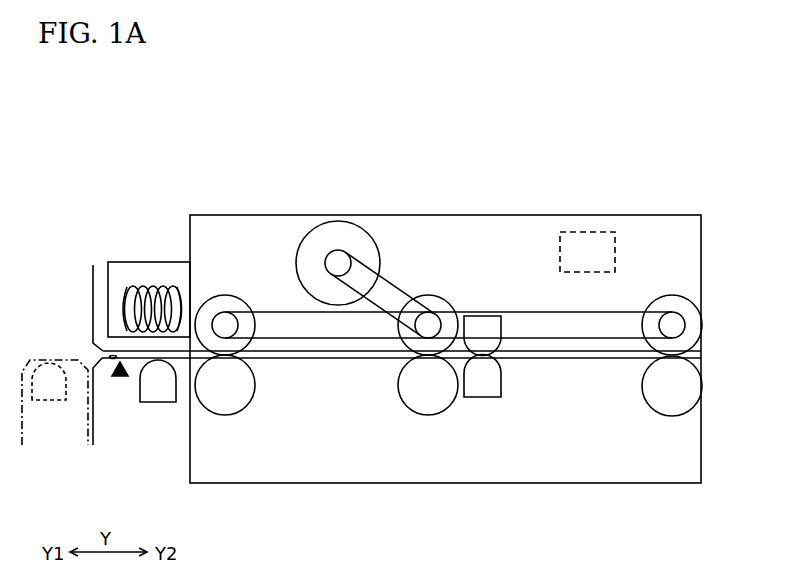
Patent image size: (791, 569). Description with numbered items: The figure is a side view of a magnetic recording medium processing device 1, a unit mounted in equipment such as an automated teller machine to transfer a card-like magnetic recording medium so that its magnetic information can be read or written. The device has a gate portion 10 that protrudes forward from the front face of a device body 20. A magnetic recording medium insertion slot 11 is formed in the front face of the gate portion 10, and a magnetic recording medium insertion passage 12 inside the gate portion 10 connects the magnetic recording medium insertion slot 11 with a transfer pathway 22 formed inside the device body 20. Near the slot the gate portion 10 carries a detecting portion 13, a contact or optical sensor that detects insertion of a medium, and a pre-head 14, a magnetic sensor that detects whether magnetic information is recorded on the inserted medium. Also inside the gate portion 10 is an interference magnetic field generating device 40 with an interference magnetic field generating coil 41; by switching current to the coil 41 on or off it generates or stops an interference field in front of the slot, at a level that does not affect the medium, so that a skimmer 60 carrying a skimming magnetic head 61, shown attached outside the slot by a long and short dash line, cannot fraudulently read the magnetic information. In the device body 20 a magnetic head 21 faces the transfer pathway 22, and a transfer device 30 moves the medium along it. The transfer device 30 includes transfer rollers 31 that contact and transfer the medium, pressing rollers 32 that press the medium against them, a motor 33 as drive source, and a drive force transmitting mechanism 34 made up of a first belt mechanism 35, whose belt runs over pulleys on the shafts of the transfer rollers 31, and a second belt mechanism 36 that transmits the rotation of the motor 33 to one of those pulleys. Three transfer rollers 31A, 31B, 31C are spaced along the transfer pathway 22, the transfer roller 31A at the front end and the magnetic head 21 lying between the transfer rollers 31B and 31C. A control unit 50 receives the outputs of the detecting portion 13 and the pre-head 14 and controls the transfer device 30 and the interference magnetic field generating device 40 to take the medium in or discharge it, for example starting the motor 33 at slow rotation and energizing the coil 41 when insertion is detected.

The magnetic recording medium processing device 1 is at (700, 146).
The gate portion 10 is at (170, 240).
The magnetic recording medium insertion slot 11 is at (91, 344).
The magnetic recording medium insertion passage 12 is at (106, 372).
The detecting portion 13 is at (119, 378).
The pre-head 14 is at (153, 404).
The device body 20 is at (237, 203).
The magnetic head 21 is at (481, 399).
The transfer pathway 22 is at (583, 359).
The transfer device 30 is at (398, 255).
The transfer rollers 31 is at (479, 362).
The transfer roller 31A is at (236, 297).
The transfer roller 31B is at (407, 346).
The transfer roller 31C is at (675, 296).
The pressing rollers 32 is at (226, 415).
The motor 33 is at (368, 232).
The drive force transmitting mechanism 34 is at (537, 181).
The first belt mechanism 35 is at (532, 298).
The second belt mechanism 36 is at (419, 275).
The interference magnetic field generating device 40 is at (139, 280).
The interference magnetic field generating coil 41 is at (145, 297).
The control unit 50 is at (585, 230).
The skimmer 60 is at (21, 432).
The magnetic head 61 is at (56, 402).